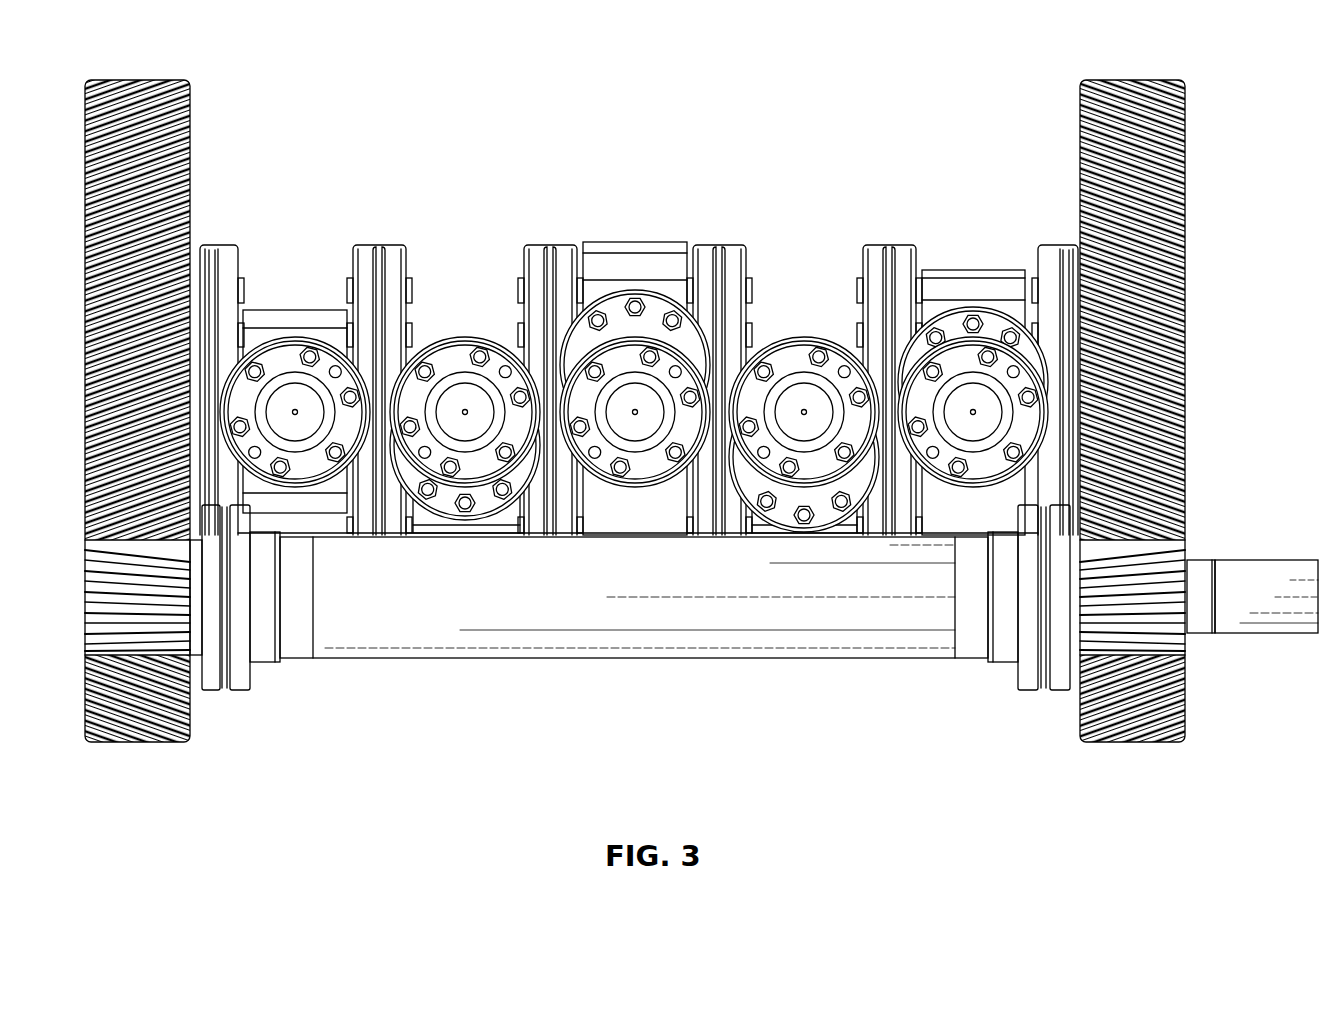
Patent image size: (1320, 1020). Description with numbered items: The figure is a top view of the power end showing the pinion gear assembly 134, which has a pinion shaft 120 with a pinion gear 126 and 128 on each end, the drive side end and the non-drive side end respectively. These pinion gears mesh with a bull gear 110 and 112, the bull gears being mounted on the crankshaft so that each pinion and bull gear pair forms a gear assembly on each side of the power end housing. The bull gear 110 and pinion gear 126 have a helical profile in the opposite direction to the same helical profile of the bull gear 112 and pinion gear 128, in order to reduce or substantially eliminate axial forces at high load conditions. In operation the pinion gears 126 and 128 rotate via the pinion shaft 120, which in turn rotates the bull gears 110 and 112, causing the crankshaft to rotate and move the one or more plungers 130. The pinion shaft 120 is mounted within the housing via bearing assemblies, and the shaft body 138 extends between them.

The bull gear 110 is at (1181, 411).
The bull gear 112 is at (183, 442).
The pinion shaft 120 is at (1252, 577).
The pinion gear 126 is at (1160, 637).
The pinion gear 128 is at (172, 635).
The plunger 130 is at (636, 410).
The pinion gear assembly 134 is at (639, 466).
The main shaft 138 is at (578, 612).